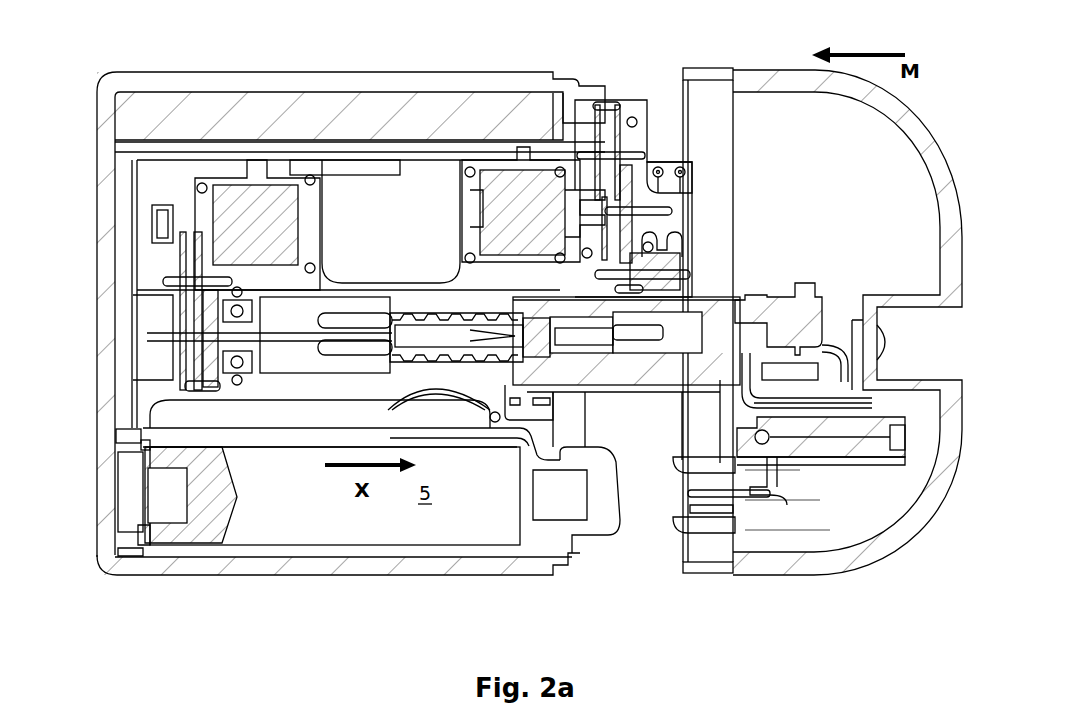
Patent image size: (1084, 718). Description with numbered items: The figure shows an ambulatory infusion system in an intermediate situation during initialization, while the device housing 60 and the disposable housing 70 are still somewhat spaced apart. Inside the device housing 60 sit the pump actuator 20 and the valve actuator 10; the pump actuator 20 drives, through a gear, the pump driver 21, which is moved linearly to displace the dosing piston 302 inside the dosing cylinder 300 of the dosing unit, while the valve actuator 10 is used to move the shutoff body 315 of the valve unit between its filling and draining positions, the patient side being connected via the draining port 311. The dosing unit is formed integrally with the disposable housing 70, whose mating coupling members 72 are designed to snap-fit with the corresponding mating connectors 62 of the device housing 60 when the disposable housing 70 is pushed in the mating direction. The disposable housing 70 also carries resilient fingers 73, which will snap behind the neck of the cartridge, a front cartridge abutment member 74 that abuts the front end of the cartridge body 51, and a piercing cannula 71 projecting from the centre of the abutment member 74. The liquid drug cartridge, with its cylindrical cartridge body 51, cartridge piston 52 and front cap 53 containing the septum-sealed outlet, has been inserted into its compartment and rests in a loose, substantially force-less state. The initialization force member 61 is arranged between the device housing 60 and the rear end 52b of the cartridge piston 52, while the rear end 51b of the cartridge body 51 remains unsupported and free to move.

The pump actuator 20 is at (265, 200).
The valve actuator 10 is at (498, 192).
The device housing 60 is at (483, 78).
The mating connector 62 is at (566, 85).
The dosing piston 302 is at (533, 323).
The mating coupling member 72 is at (702, 72).
The dosing cylinder 300 is at (703, 290).
The shutoff body 315 is at (785, 290).
The draining port 311 is at (897, 342).
The rear end of the cartridge body 51b is at (142, 437).
The cartridge piston 52 is at (215, 463).
The initialization force member 61 is at (140, 537).
The rear end of the cartridge piston 52b is at (141, 530).
The pump driver 21 is at (350, 338).
The cartridge body 51 is at (456, 547).
The cap 53 is at (603, 498).
The piercing cannula 71 is at (690, 495).
The front cartridge abutment member 74 is at (733, 508).
The resilient fingers 73 is at (715, 522).
The disposable housing 70 is at (845, 547).